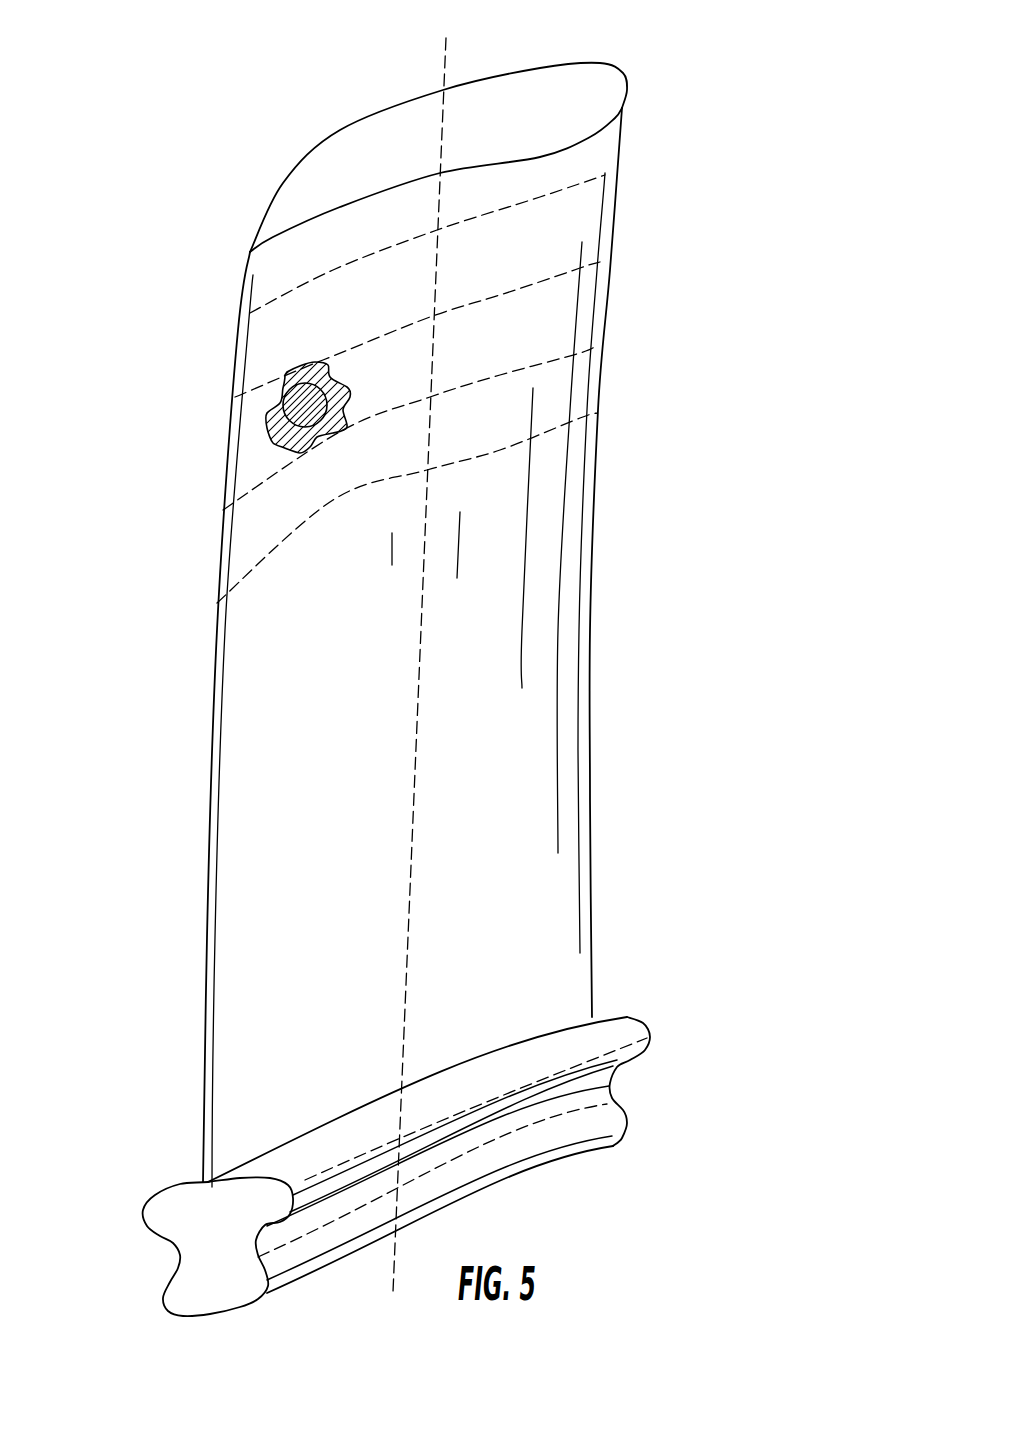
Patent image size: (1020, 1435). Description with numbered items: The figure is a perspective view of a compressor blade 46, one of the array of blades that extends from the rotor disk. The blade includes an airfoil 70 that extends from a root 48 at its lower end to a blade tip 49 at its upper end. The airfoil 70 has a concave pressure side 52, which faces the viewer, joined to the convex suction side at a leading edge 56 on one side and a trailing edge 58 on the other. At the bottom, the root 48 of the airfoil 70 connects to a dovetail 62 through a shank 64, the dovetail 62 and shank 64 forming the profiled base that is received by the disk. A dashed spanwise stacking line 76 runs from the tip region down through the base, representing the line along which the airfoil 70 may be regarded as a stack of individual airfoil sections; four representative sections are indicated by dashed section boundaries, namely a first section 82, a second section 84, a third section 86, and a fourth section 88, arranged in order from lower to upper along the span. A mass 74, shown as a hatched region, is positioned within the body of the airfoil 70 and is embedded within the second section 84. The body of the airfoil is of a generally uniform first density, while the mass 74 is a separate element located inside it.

The compressor blade 46 is at (435, 667).
The root 48 is at (432, 1147).
The blade tip 49 is at (573, 80).
The concave pressure side 52 is at (486, 655).
The leading edge 56 is at (210, 743).
The trailing edge 58 is at (597, 528).
The dovetail 62 is at (617, 1142).
The shank 64 is at (610, 1085).
The airfoil 70 is at (763, 368).
The mass 74 is at (265, 423).
The spanwise stacking line 76 is at (442, 63).
The first section 82 is at (582, 382).
The second section 84 is at (583, 312).
The third section 86 is at (597, 220).
The fourth section 88 is at (607, 147).